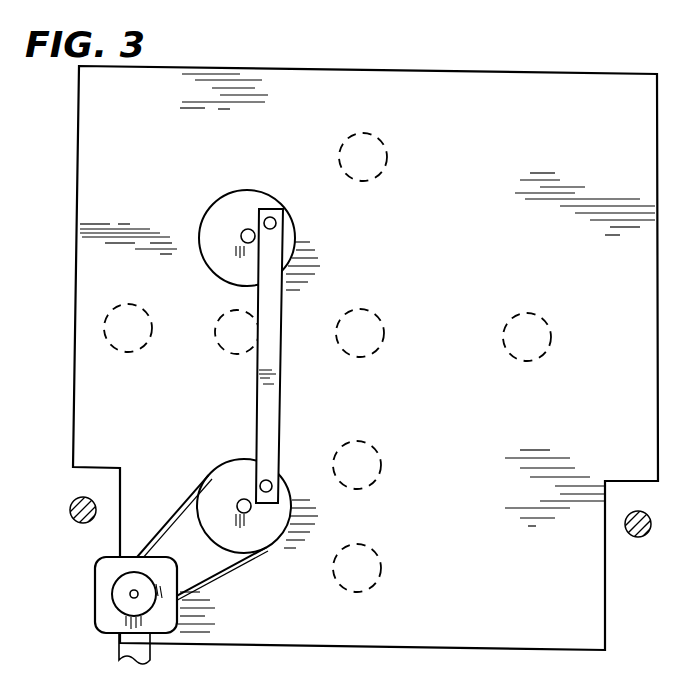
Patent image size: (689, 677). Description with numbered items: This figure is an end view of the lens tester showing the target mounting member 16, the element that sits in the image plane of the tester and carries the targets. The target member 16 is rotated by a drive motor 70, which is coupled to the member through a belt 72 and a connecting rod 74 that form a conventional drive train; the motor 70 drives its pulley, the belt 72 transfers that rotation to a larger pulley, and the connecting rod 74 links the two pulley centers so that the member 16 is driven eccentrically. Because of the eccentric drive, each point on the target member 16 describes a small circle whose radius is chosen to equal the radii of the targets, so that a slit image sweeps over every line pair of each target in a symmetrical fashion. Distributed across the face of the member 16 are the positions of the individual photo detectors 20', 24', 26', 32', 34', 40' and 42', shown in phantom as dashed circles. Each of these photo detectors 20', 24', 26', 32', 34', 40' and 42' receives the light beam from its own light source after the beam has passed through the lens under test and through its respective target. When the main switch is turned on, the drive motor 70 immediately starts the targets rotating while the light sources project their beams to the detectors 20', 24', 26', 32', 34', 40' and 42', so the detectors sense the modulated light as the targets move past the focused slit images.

The target mounting member 16 is at (496, 245).
The photo detector 34' is at (385, 156).
The photo detector 20' is at (378, 324).
The photo detector 32' is at (546, 342).
The photo detector 40' is at (127, 312).
The photo detector 24' is at (212, 340).
The photo detector 26' is at (384, 465).
The photo detector 42' is at (384, 568).
The connecting rod 74 is at (270, 405).
The belt 72 is at (222, 568).
The drive motor 70 is at (97, 593).